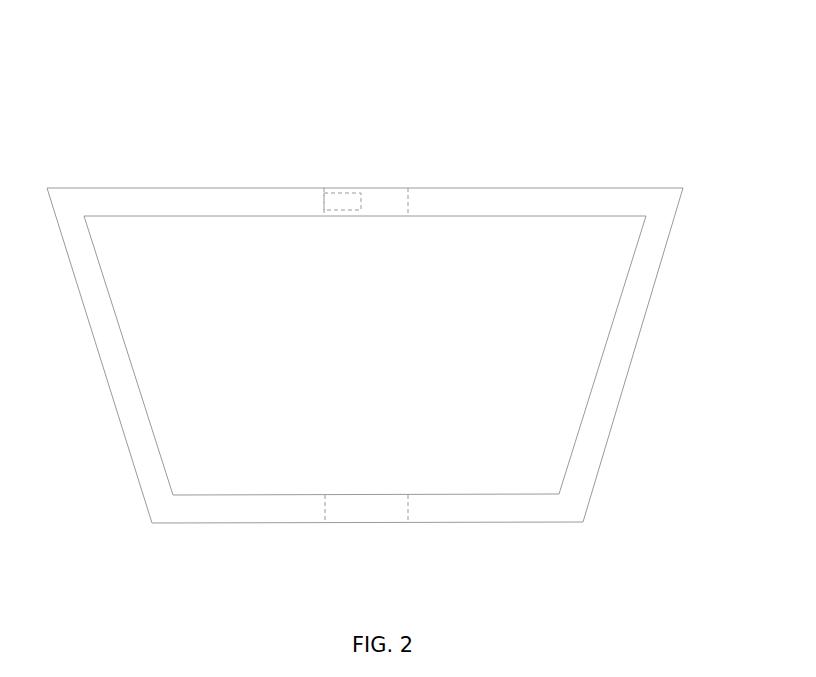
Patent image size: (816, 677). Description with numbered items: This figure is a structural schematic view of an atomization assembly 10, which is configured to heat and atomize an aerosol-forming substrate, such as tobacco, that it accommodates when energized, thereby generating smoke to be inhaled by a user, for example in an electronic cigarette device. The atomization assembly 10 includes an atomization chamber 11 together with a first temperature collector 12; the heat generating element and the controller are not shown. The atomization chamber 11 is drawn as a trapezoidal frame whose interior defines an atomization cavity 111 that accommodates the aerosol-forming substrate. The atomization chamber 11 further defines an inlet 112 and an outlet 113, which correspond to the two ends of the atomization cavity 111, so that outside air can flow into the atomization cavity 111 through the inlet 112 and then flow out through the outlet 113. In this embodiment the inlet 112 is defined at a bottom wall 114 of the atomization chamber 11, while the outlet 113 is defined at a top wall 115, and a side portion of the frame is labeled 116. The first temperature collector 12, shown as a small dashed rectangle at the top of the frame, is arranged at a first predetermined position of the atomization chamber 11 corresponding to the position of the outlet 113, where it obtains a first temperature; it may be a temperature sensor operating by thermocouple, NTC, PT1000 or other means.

The atomization assembly 10 is at (196, 64).
The atomization chamber 11 is at (622, 397).
The atomization cavity 111 is at (518, 310).
The inlet 112 is at (365, 514).
The outlet 113 is at (380, 190).
The bottom wall 114 is at (505, 514).
The top wall 115 is at (542, 193).
The side frame portion 116 is at (136, 426).
The first temperature collector 12 is at (343, 200).